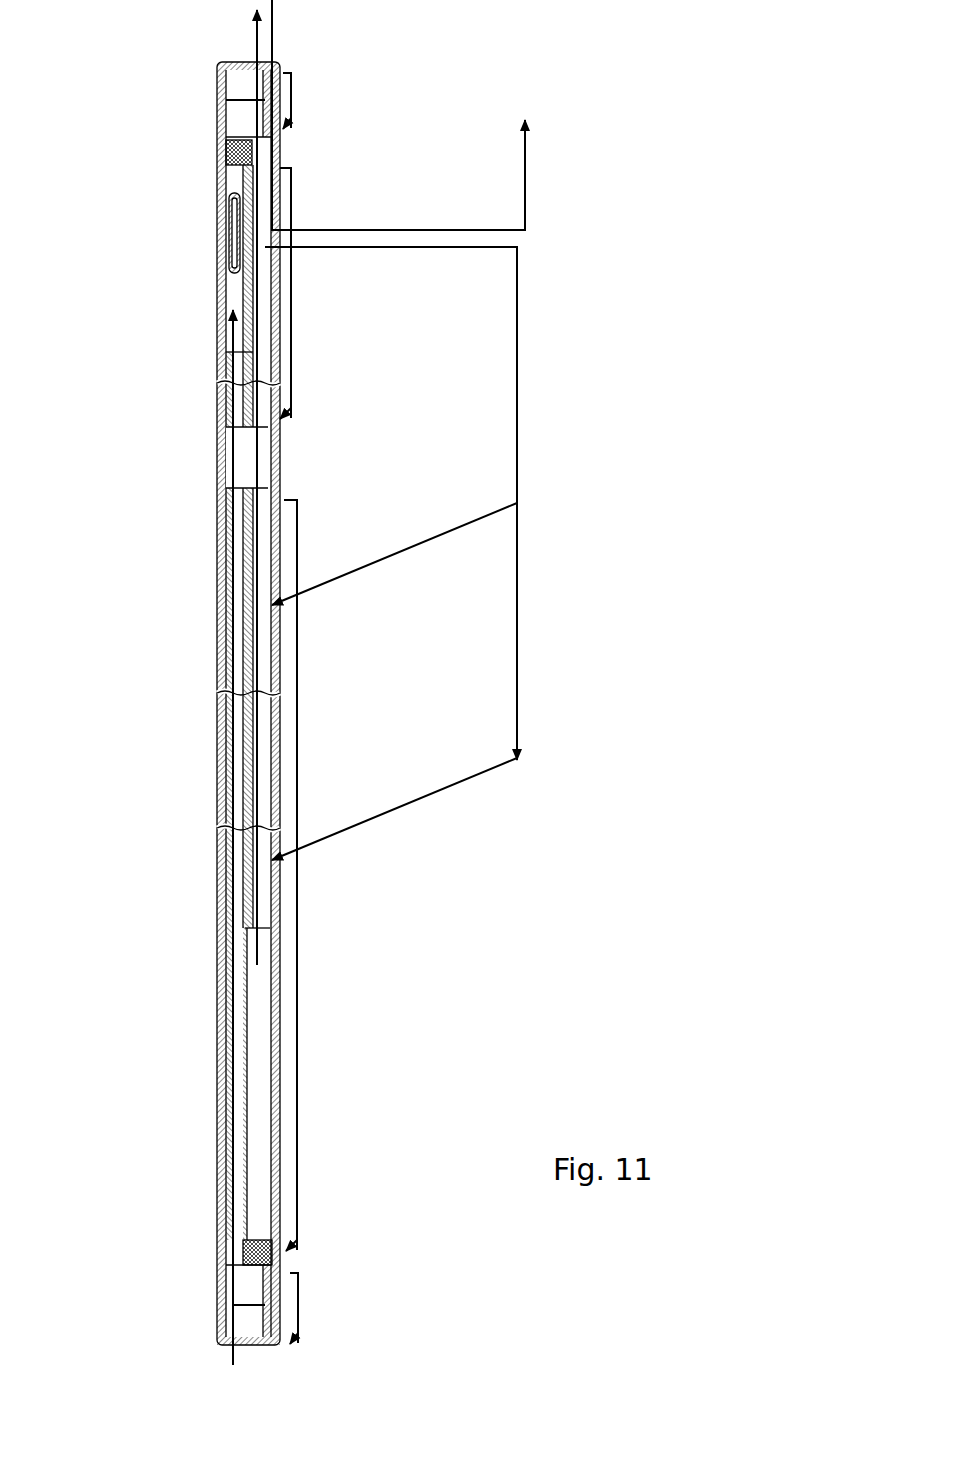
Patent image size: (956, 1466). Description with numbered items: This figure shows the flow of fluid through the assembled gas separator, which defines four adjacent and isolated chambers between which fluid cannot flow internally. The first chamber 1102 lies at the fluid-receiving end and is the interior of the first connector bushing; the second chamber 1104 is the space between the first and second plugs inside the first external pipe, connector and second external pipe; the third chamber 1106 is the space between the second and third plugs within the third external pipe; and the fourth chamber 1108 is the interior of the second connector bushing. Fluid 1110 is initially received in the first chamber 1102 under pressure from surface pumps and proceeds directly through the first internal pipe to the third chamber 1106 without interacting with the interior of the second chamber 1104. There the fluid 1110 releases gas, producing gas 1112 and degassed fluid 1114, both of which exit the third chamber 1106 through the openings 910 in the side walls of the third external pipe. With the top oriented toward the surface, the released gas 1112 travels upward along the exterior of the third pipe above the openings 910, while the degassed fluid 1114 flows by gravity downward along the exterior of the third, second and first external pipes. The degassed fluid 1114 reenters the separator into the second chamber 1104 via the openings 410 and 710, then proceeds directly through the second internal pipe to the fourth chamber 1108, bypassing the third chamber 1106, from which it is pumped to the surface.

The openings 410 is at (213, 882).
The openings 710 is at (208, 592).
The openings 910 is at (205, 250).
The first chamber 1102 is at (298, 1310).
The second chamber 1104 is at (297, 873).
The third chamber 1106 is at (291, 293).
The fourth chamber 1108 is at (291, 100).
The fluid 1110 is at (232, 1280).
The gas 1112 is at (533, 178).
The degassed fluid 1114 is at (535, 415).